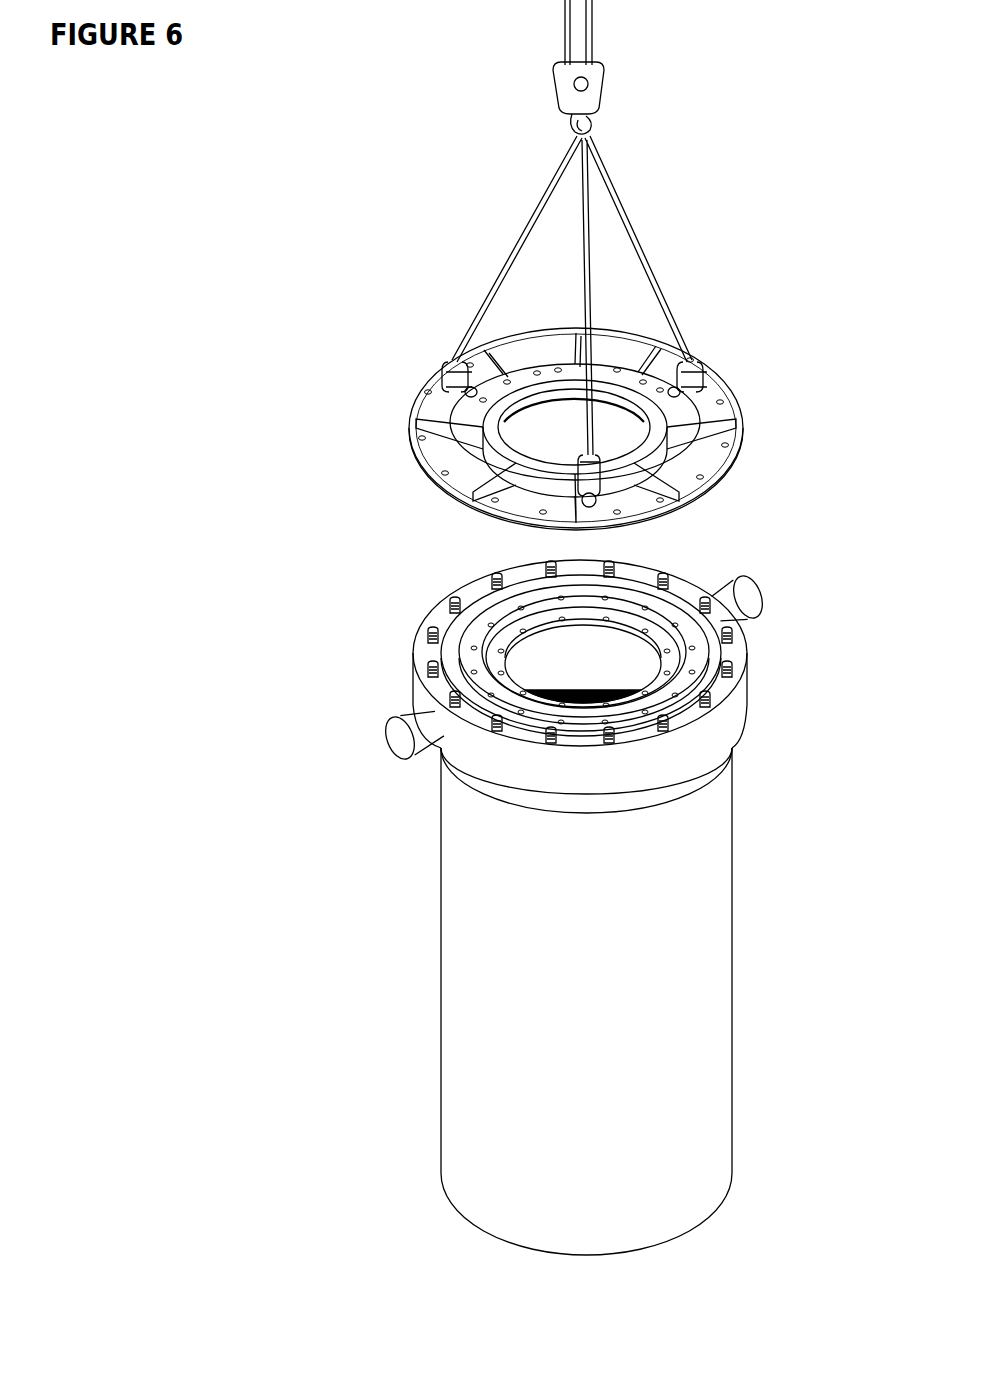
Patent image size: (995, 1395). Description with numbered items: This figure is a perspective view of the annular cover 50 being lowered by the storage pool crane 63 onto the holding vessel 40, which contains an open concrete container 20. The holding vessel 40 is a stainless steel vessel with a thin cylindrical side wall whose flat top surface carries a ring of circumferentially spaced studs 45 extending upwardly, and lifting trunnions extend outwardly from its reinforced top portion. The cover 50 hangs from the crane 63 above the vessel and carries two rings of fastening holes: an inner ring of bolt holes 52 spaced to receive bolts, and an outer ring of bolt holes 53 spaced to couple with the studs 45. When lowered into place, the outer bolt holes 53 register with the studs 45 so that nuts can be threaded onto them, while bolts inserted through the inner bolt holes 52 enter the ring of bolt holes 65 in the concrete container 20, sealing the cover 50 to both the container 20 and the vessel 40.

The concrete container 20 is at (470, 683).
The holding vessel 40 is at (747, 865).
The studs 45 is at (430, 618).
The annular cover 50 is at (575, 333).
The bolt holes 52 is at (447, 382).
The bolt holes 53 is at (410, 440).
The storage pool crane 63 is at (603, 95).
The ring of bolt holes 65 is at (683, 655).